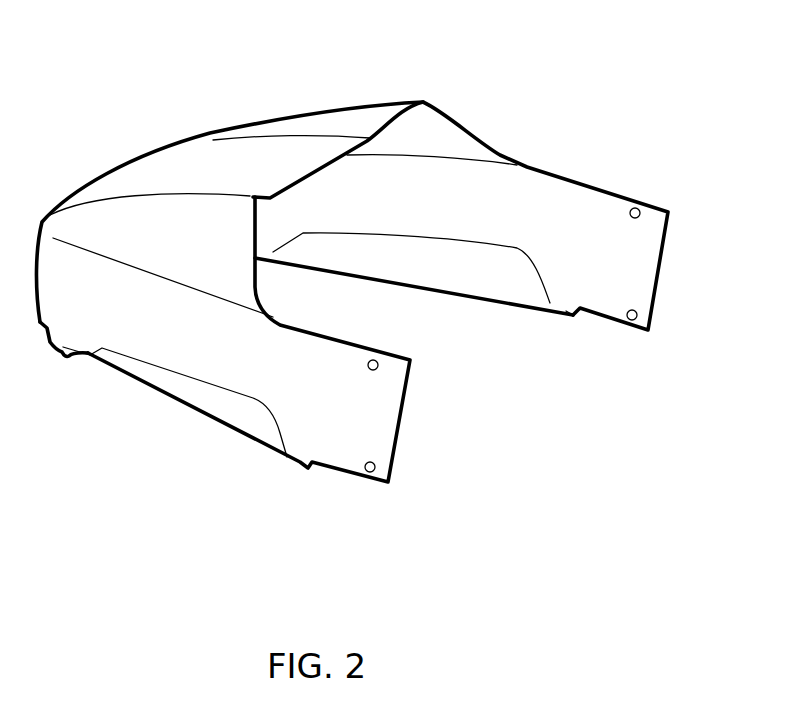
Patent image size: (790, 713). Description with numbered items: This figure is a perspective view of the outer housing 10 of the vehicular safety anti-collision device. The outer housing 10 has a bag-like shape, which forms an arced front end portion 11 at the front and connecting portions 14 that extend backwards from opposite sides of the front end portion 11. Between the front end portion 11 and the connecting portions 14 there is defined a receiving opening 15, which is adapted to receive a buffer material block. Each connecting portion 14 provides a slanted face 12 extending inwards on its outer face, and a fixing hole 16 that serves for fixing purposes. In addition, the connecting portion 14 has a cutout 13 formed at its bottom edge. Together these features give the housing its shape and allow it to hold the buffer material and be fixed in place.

The outer housing 10 is at (250, 170).
The front end portion 11 is at (65, 356).
The slanted face 12 is at (217, 407).
The cutout 13 is at (573, 315).
The connecting portions 14 is at (357, 420).
The receiving opening 15 is at (463, 352).
The fixing hole 16 is at (635, 213).